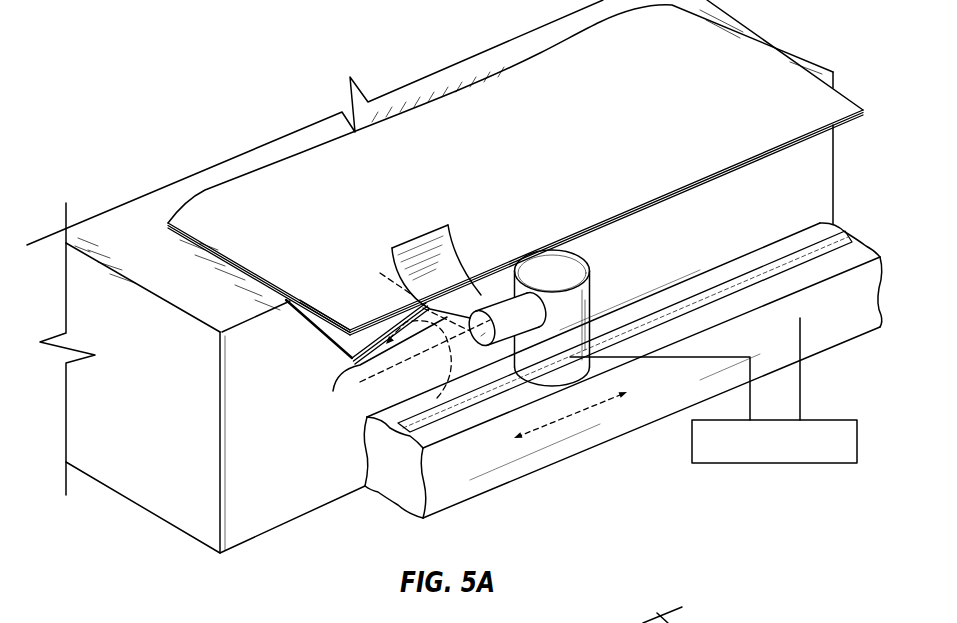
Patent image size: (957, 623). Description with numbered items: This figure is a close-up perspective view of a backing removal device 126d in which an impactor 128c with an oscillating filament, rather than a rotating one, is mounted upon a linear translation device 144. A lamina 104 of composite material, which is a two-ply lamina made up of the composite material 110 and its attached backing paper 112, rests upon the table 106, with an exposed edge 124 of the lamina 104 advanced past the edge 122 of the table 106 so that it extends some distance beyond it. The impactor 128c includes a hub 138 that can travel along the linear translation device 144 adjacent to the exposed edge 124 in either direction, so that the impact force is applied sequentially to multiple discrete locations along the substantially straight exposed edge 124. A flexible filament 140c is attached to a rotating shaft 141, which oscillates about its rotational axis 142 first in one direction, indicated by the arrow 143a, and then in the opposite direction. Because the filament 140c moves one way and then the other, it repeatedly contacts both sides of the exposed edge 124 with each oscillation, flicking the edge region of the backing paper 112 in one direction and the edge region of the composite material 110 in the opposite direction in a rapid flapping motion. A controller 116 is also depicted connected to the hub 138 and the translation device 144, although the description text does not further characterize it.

The lamina 104 is at (450, 133).
The table 106 is at (112, 210).
The composite material 110 is at (330, 340).
The backing paper 112 is at (350, 311).
The controller 116 is at (773, 463).
The edge of the support structure 122 is at (248, 328).
The exposed edge 124 is at (808, 143).
The backing removal device 126d is at (232, 44).
The impactor 128c is at (605, 269).
The hub 138 is at (540, 265).
The oscillating filament 140c is at (407, 247).
The rotating shaft 141 is at (507, 315).
The rotational axis 142 is at (367, 416).
The arrow 143a is at (370, 380).
The linear translation device 144 is at (550, 437).